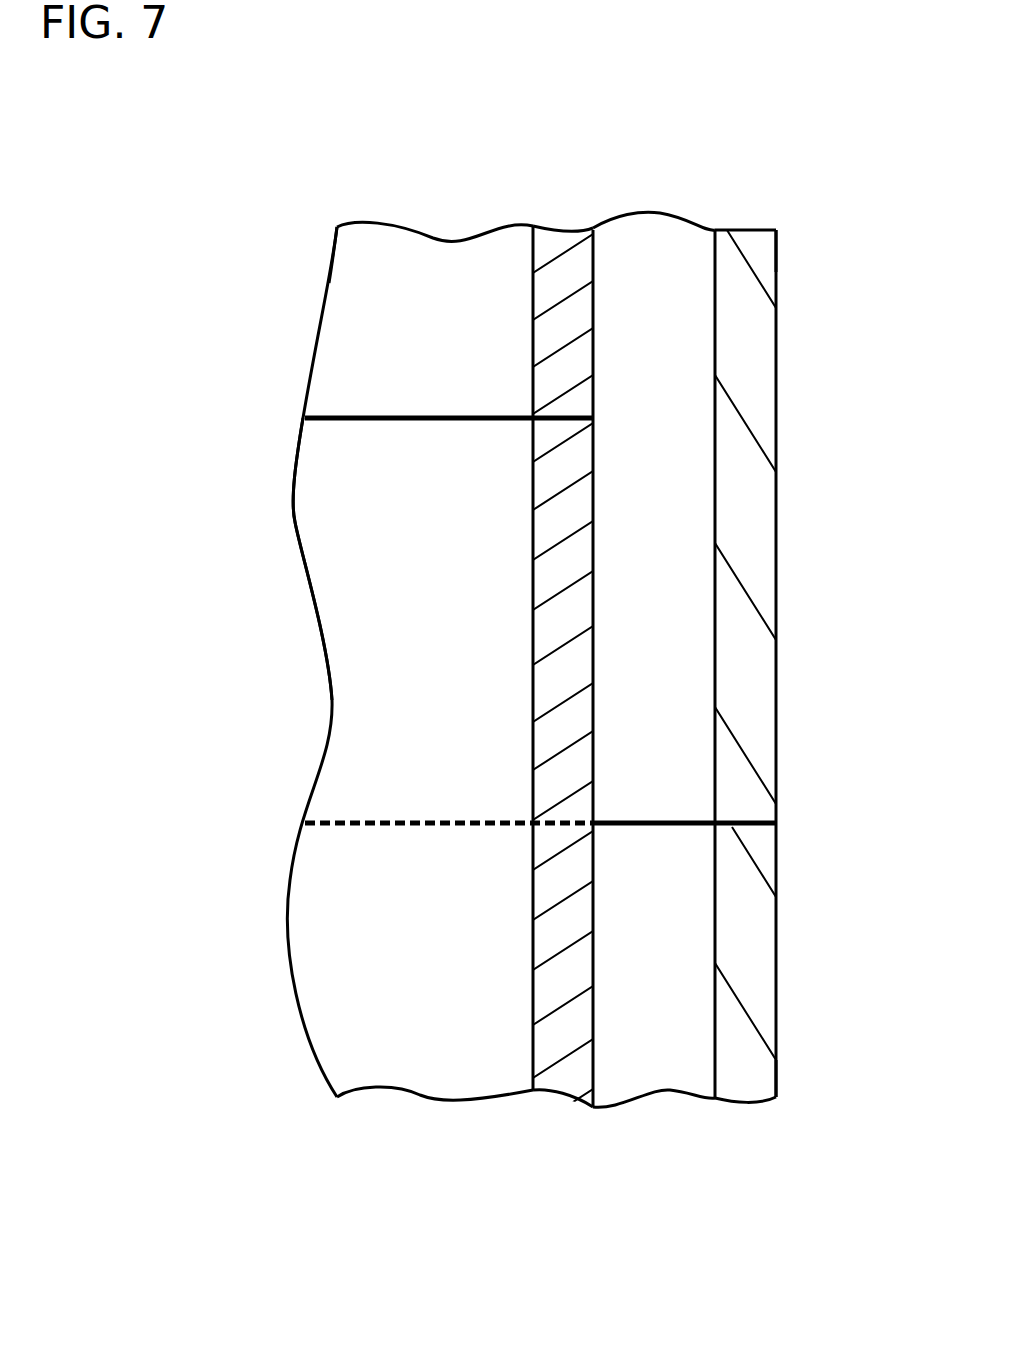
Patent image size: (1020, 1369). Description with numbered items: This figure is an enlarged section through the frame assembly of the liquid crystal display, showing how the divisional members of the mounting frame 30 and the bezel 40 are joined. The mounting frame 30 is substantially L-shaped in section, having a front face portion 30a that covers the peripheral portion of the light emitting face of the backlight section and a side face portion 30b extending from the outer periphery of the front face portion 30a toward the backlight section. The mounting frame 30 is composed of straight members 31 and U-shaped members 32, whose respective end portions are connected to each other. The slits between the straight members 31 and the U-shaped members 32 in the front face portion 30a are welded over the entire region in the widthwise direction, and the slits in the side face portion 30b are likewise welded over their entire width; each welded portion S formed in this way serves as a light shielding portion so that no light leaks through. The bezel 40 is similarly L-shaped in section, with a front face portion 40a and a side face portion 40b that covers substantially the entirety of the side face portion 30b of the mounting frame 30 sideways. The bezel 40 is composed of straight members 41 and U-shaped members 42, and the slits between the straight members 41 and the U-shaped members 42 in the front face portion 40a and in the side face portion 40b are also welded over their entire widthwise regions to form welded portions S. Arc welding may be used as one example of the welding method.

The mounting frame 30 is at (440, 773).
The front face portion 30a is at (553, 1090).
The side face portion 30b is at (450, 1103).
The straight member 31 is at (295, 521).
The U-shaped member 32 is at (337, 283).
The bezel 40 is at (684, 772).
The front face portion 40a is at (747, 1107).
The side face portion 40b is at (652, 1097).
The straight member 41 is at (778, 1077).
The U-shaped member 42 is at (777, 272).
The welded portion S is at (380, 418).